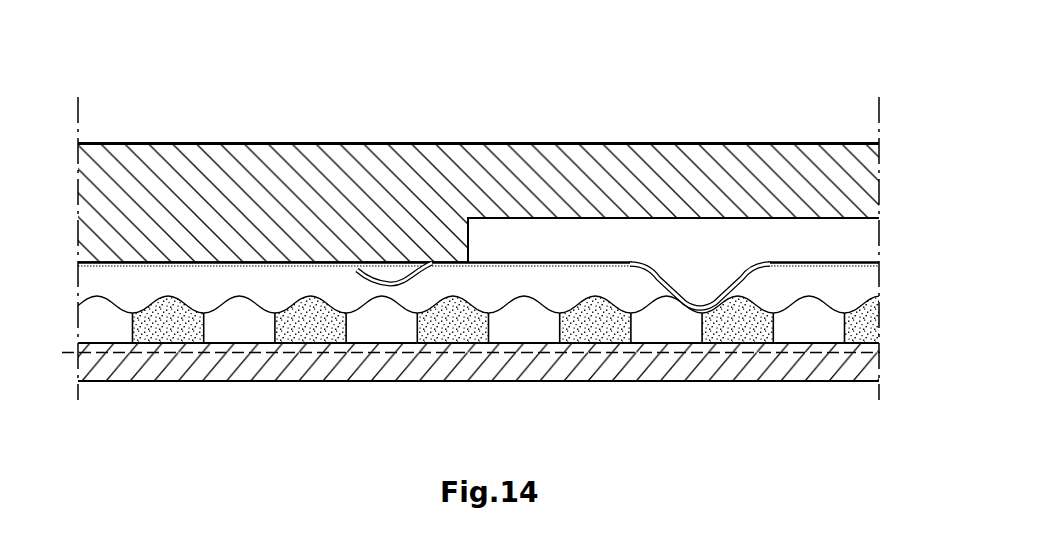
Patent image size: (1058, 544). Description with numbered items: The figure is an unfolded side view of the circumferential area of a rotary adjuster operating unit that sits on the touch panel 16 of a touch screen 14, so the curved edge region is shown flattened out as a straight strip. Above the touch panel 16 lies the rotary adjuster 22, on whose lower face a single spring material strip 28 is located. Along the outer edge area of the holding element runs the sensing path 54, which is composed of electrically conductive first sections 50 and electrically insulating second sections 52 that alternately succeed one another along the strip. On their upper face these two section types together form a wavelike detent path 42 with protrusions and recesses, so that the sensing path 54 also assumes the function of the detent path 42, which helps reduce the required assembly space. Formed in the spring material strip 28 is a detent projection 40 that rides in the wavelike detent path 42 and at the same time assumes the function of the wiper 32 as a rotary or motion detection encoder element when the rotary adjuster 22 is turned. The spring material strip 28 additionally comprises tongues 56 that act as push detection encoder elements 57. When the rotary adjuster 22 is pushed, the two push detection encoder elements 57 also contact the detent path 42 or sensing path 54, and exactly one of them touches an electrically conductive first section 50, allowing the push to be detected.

The touch screen 14 is at (324, 364).
The touch panel 16 is at (393, 346).
The rotary adjuster 22 is at (168, 180).
The spring material strip 28 is at (540, 262).
The wiper 32 is at (684, 248).
The detent projection 40 is at (742, 282).
The detent path 42 is at (801, 282).
The electrically conductive first section 50 is at (163, 318).
The electrically insulating second section 52 is at (246, 322).
The sensing path 54 is at (918, 312).
The tongue 56 is at (398, 282).
The push detection encoder element 57 is at (367, 236).